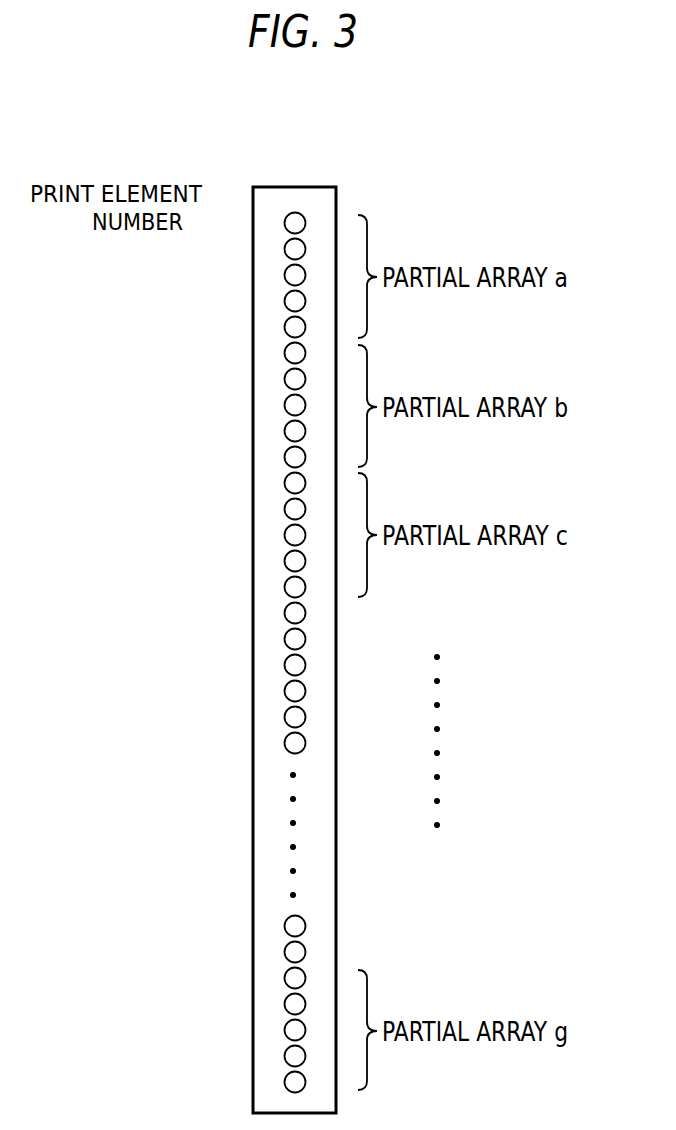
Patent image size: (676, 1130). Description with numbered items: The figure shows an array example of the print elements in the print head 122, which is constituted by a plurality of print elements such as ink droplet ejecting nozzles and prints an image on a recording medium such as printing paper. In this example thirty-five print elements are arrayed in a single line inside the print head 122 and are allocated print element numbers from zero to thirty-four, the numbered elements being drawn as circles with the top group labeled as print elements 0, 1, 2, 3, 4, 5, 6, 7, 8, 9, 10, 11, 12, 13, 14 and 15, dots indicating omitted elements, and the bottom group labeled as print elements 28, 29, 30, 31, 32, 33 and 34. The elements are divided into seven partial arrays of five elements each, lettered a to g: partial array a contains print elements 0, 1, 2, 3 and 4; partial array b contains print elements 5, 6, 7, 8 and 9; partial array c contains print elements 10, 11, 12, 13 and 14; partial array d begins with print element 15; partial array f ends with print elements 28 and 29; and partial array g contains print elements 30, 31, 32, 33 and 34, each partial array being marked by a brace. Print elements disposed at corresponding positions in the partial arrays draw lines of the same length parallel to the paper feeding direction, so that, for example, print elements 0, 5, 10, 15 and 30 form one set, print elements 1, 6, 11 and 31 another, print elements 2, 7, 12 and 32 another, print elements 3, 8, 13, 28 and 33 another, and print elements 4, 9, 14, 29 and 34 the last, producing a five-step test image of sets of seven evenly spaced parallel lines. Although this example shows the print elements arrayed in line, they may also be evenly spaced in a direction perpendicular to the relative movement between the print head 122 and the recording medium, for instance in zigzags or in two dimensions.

The print head 122 is at (299, 186).
The print element 0 is at (284, 223).
The print element 1 is at (284, 249).
The print element 2 is at (284, 275).
The print element 3 is at (284, 301).
The print element 4 is at (284, 327).
The print element 5 is at (284, 353).
The print element 6 is at (284, 379).
The print element 7 is at (284, 405).
The print element 8 is at (284, 431).
The print element 9 is at (284, 457).
The print element 10 is at (284, 483).
The print element 11 is at (284, 509).
The print element 12 is at (284, 535).
The print element 13 is at (284, 561).
The print element 14 is at (284, 587).
The print element 15 is at (284, 613).
The print element 28 is at (284, 926).
The print element 29 is at (284, 952).
The print element 30 is at (284, 978).
The print element 31 is at (284, 1004).
The print element 32 is at (284, 1030).
The print element 33 is at (284, 1056).
The print element 34 is at (284, 1082).